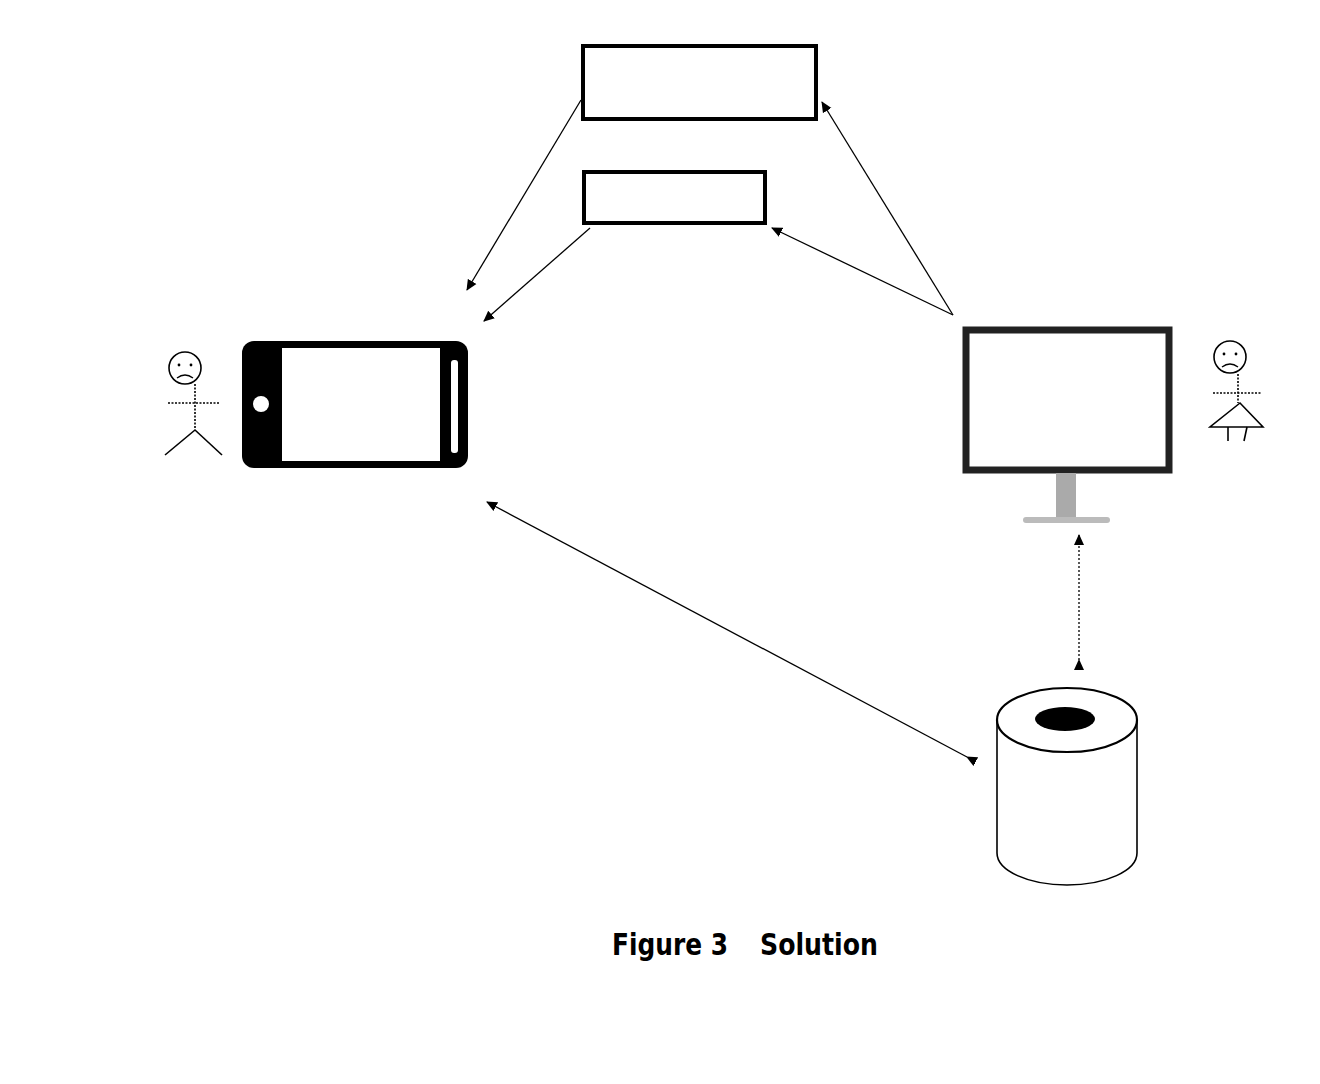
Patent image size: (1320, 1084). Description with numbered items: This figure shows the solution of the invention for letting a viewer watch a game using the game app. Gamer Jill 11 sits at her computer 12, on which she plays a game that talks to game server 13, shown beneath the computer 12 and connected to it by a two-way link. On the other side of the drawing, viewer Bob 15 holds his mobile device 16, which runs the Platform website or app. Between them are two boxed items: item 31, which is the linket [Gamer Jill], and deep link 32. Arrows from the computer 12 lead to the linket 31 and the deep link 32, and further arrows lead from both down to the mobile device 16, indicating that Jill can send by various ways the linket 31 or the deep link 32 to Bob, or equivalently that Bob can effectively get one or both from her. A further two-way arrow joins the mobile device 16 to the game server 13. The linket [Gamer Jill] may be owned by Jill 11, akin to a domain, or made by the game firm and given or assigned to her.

The linket 31 is at (724, 80).
The deep link 32 is at (674, 223).
The mobile device 16 is at (352, 379).
The viewer Bob 15 is at (181, 427).
The computer 12 is at (1067, 402).
The gamer Jill 11 is at (1232, 418).
The game server 13 is at (1117, 810).